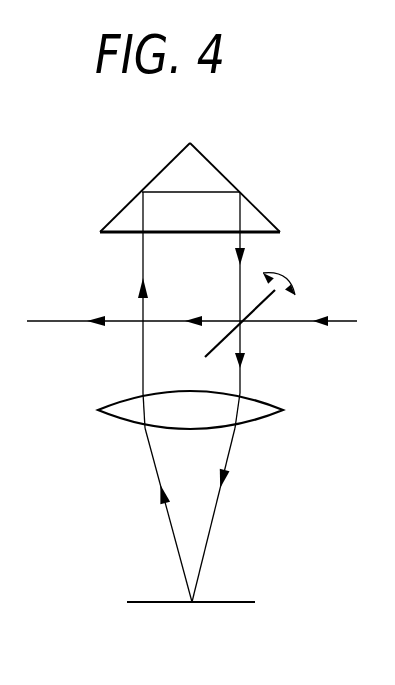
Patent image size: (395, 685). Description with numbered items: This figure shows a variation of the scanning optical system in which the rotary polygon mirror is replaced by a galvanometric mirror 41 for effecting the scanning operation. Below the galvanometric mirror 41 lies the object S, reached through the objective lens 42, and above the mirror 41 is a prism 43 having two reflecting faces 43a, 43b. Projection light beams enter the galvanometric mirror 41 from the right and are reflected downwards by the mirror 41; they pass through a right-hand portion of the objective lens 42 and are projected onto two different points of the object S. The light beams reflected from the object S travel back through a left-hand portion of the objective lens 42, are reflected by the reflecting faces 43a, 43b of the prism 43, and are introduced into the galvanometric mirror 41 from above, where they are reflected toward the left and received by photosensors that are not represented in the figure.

The prism 43 is at (200, 177).
The reflecting face of prism 43a is at (123, 208).
The reflecting face of prism 43b is at (263, 210).
The galvanometric mirror 41 is at (258, 305).
The objective lens 42 is at (255, 422).
The object S is at (238, 602).